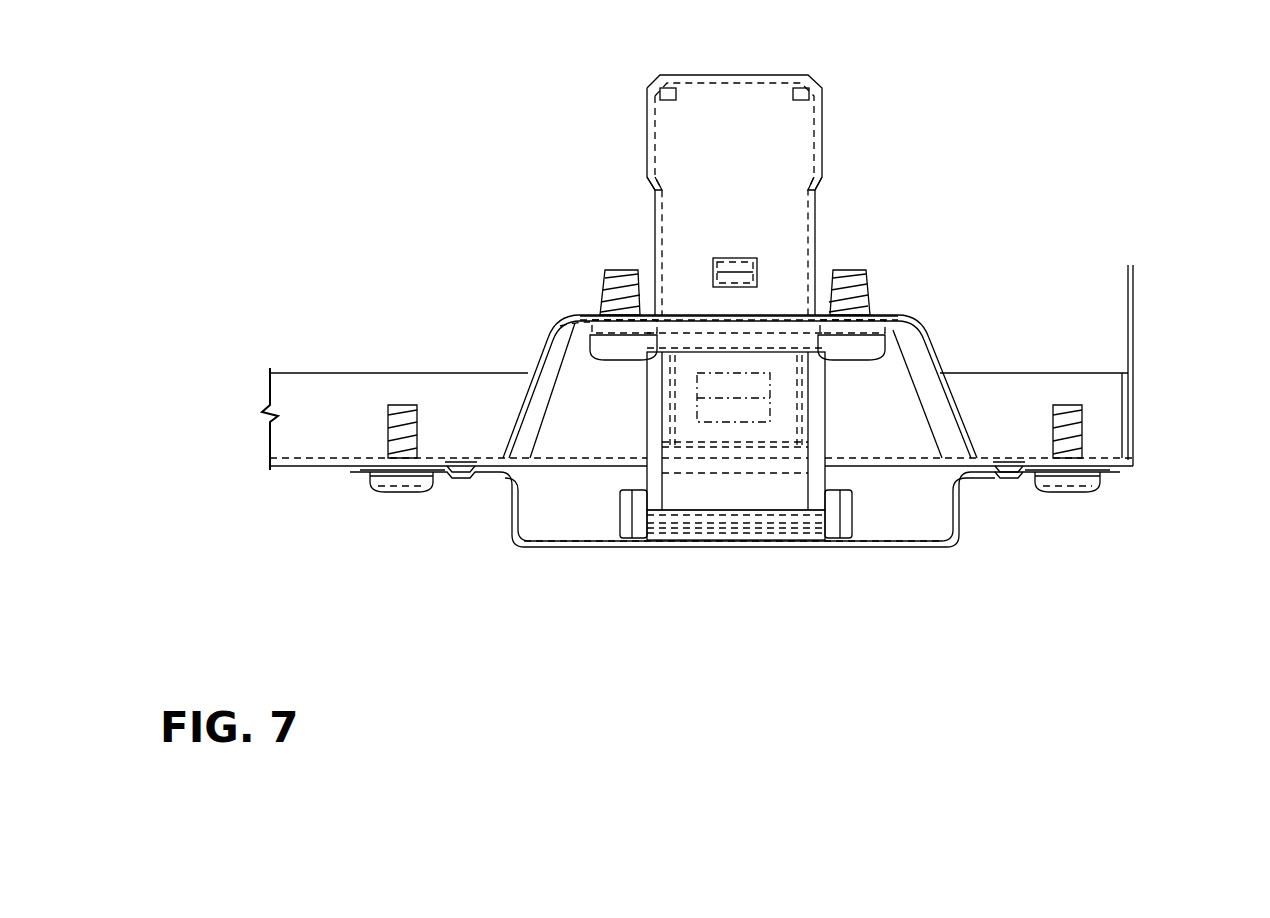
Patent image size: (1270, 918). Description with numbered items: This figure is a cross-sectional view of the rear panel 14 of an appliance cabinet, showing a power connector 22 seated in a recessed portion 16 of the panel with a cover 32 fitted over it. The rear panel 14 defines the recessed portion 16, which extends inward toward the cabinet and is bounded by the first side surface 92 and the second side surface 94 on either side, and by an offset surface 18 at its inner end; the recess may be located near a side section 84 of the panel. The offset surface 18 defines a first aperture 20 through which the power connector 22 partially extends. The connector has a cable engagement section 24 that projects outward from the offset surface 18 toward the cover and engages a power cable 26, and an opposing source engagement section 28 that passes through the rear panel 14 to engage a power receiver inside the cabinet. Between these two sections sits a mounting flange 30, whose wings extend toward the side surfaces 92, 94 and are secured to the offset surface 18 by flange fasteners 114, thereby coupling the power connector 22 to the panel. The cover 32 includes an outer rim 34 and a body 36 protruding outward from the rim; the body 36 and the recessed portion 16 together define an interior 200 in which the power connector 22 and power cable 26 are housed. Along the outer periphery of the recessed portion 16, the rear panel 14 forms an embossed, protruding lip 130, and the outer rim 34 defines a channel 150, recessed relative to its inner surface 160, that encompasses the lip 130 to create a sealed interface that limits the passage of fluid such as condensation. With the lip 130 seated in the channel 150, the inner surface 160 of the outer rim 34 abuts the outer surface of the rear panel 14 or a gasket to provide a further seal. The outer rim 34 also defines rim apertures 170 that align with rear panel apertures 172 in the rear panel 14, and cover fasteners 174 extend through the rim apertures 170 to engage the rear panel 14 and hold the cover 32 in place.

The rear panel 14 is at (1135, 355).
The recessed portion 16 is at (947, 300).
The offset surface 18 is at (905, 315).
The first aperture 20 is at (817, 313).
The power connector 22 is at (760, 92).
The cable engagement section 24 is at (772, 330).
The power cable 26 is at (843, 522).
The source engagement section 28 is at (668, 145).
The mounting flange 30 is at (597, 312).
The cover 32 is at (524, 547).
The outer rim 34 is at (362, 470).
The body 36 is at (783, 548).
The side section 84 is at (1133, 436).
The first side surface 92 is at (523, 397).
The second side surface 94 is at (940, 350).
The flange fasteners 114 is at (610, 270).
The lip 130 is at (457, 468).
The channel 150 is at (458, 473).
The inner surface 160 is at (368, 472).
The rim apertures 170 is at (387, 460).
The rear panel apertures 172 is at (392, 468).
The cover fasteners 174 is at (400, 488).
The interior 200 is at (597, 472).